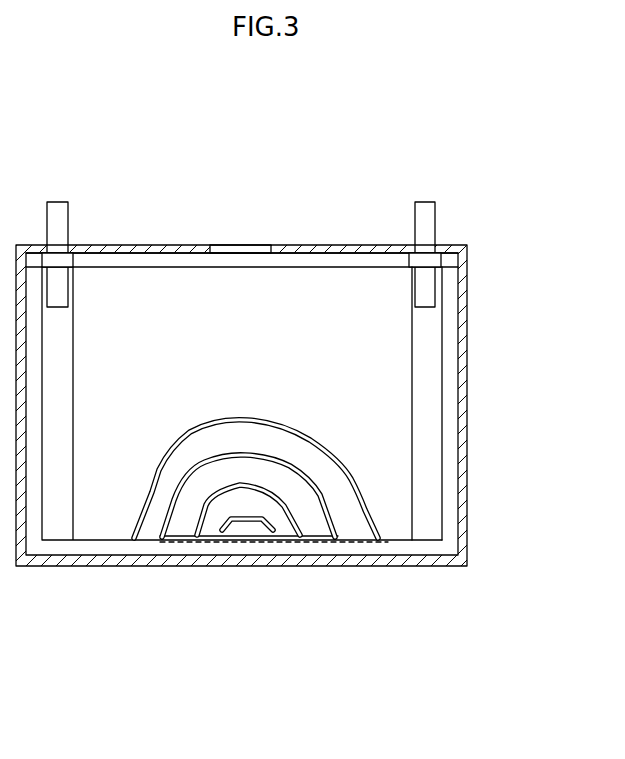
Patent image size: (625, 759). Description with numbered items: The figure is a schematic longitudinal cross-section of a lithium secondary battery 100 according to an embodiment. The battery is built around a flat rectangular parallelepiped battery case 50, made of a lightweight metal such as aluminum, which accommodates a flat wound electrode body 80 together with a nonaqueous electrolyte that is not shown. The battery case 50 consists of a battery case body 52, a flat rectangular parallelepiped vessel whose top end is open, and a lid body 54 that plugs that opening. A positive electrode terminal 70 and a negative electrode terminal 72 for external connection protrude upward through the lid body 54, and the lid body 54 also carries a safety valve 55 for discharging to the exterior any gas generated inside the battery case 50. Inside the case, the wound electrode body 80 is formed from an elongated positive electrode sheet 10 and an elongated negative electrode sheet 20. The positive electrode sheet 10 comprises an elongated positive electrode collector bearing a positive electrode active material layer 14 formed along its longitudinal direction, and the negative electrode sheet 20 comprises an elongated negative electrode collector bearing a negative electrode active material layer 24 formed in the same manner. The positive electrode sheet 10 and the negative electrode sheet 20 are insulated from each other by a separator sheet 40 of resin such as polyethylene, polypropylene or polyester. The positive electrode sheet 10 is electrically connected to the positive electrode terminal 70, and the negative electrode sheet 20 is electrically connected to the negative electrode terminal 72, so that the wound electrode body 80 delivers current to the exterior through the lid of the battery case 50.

The lithium secondary battery 100 is at (463, 143).
The battery case 50 is at (467, 403).
The battery case body 52 is at (462, 522).
The lid body 54 is at (352, 250).
The safety valve 55 is at (236, 252).
The positive electrode terminal 70 is at (57, 213).
The negative electrode terminal 72 is at (423, 215).
The positive electrode sheet 10 is at (148, 525).
The positive electrode active material layer 14 is at (242, 464).
The negative electrode sheet 20 is at (213, 522).
The negative electrode active material layer 24 is at (324, 464).
The separator sheet 40 is at (100, 522).
The wound electrode body 80 is at (392, 542).